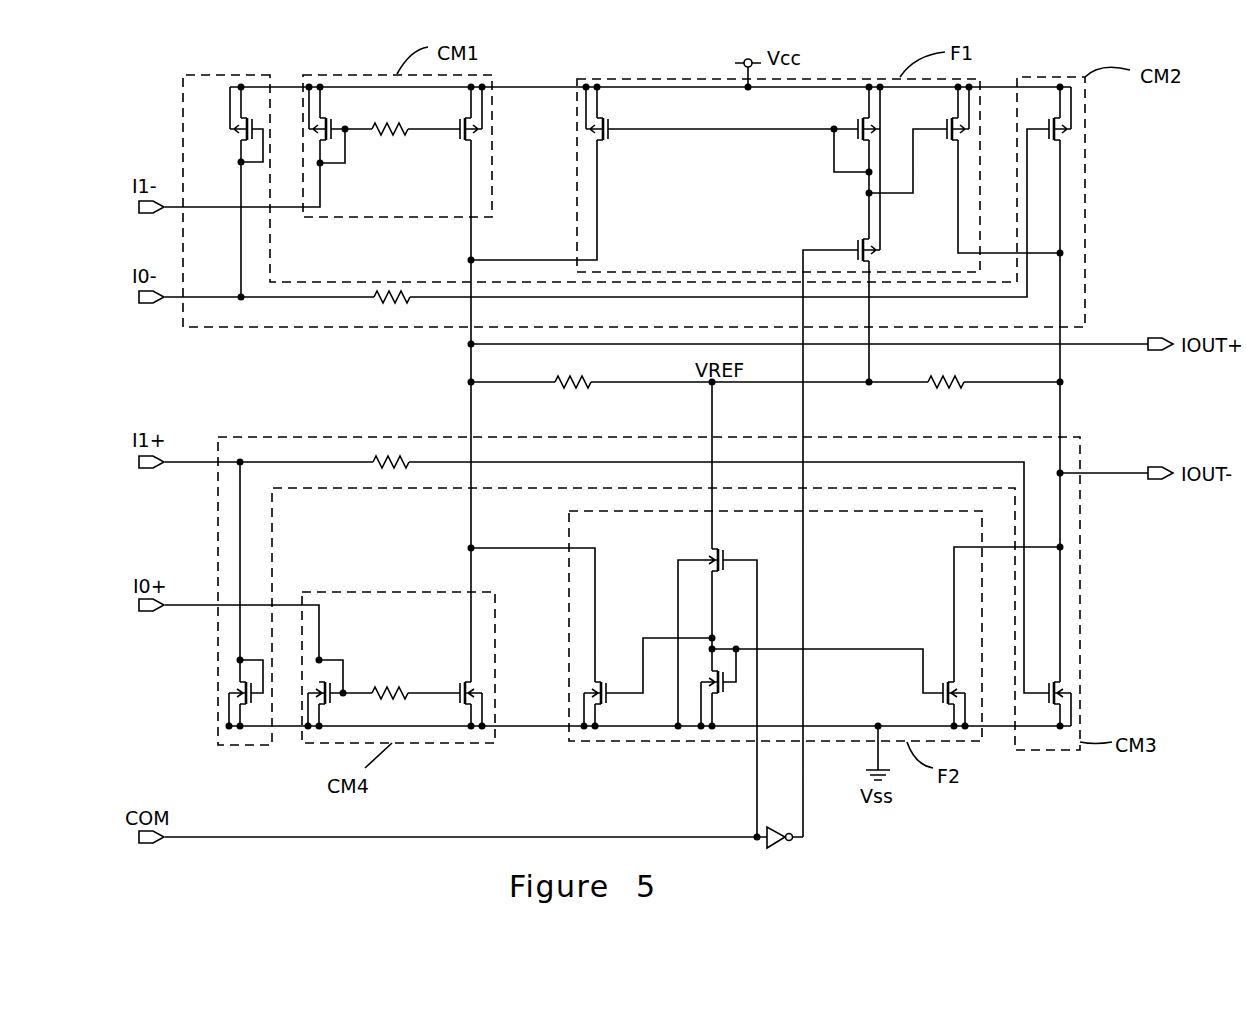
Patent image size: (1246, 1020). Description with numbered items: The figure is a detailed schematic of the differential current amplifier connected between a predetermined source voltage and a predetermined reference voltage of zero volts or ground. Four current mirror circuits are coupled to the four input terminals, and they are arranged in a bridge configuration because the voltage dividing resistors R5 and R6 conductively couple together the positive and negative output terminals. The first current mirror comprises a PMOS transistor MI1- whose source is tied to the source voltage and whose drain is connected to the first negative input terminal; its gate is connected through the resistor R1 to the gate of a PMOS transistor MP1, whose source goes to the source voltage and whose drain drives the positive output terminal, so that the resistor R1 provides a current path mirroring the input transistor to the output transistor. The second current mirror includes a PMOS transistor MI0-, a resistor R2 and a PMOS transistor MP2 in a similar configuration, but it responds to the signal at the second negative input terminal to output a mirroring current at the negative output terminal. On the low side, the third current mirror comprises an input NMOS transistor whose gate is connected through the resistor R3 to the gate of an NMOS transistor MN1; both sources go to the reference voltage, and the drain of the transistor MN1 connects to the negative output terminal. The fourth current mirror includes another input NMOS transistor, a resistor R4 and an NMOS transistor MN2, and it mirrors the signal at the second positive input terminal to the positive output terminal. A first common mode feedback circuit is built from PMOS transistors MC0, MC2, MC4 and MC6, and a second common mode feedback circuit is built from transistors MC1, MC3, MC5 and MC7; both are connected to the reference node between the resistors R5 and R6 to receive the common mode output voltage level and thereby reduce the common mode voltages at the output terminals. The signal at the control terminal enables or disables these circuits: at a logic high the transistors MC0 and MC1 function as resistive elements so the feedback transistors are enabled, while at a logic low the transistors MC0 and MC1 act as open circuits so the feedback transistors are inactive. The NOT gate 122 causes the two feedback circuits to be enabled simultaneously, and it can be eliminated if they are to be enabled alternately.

The NOT gate 122 is at (778, 845).
The resistor R1 is at (390, 146).
The resistor R2 is at (392, 308).
The resistor R3 is at (391, 471).
The resistor R4 is at (390, 707).
The voltage dividing resistor R5 is at (573, 397).
The voltage dividing resistor R6 is at (946, 397).
The PMOS transistor MI0- is at (258, 116).
The PMOS transistor MI1- is at (338, 116).
The PMOS transistor MP1 is at (497, 117).
The PMOS transistor MC4 is at (571, 129).
The PMOS transistor MC2 is at (892, 122).
The PMOS transistor MC0 is at (891, 245).
The PMOS transistor MC6 is at (983, 128).
The PMOS transistor MP2 is at (1086, 129).
The NMOS transistor MN2 is at (488, 684).
The transistor MC5 is at (578, 683).
The transistor MC1 is at (736, 548).
The transistor MC3 is at (729, 695).
The transistor MC7 is at (972, 684).
The NMOS transistor MN1 is at (1082, 684).